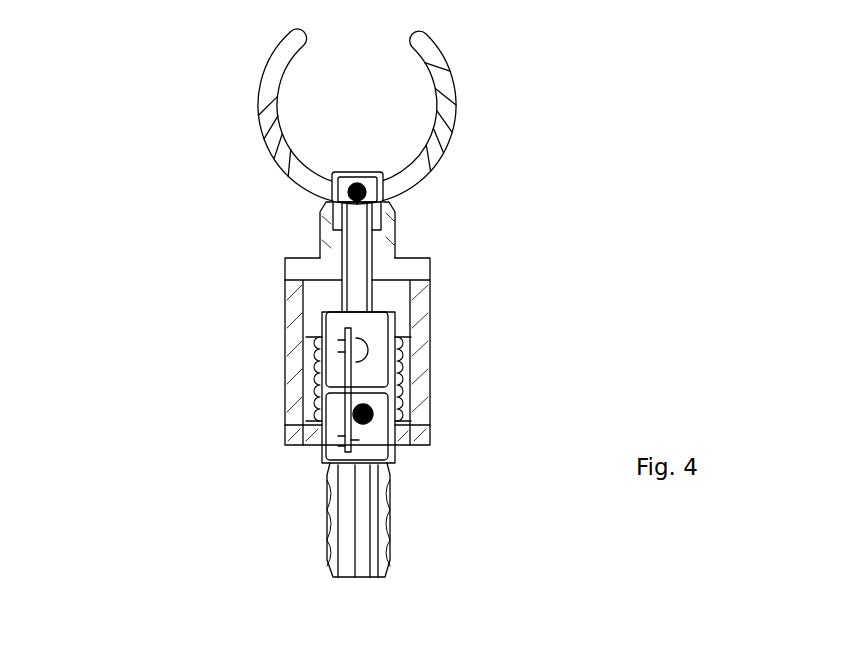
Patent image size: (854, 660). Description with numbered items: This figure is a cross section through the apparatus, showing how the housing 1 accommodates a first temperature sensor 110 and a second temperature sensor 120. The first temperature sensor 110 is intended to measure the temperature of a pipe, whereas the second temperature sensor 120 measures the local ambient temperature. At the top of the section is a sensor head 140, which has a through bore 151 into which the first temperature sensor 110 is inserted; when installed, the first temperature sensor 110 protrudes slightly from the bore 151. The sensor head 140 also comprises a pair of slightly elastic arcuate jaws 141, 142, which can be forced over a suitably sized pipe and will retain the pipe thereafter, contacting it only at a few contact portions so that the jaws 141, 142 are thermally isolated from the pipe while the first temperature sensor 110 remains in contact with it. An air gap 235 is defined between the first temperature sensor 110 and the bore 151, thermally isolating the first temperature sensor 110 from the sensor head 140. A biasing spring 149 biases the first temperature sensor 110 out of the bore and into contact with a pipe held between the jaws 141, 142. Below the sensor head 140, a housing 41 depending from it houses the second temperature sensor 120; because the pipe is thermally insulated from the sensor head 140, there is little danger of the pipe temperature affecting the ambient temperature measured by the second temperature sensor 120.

The housing 1 is at (176, 286).
The sensor head 140 is at (533, 189).
The arcuate jaw 141 is at (262, 134).
The arcuate jaw 142 is at (455, 97).
The air gap 235 is at (334, 176).
The first temperature sensor 110 is at (400, 202).
The through bore 151 is at (400, 247).
The housing 41 is at (290, 348).
The biasing spring 149 is at (432, 376).
The second temperature sensor 120 is at (388, 448).